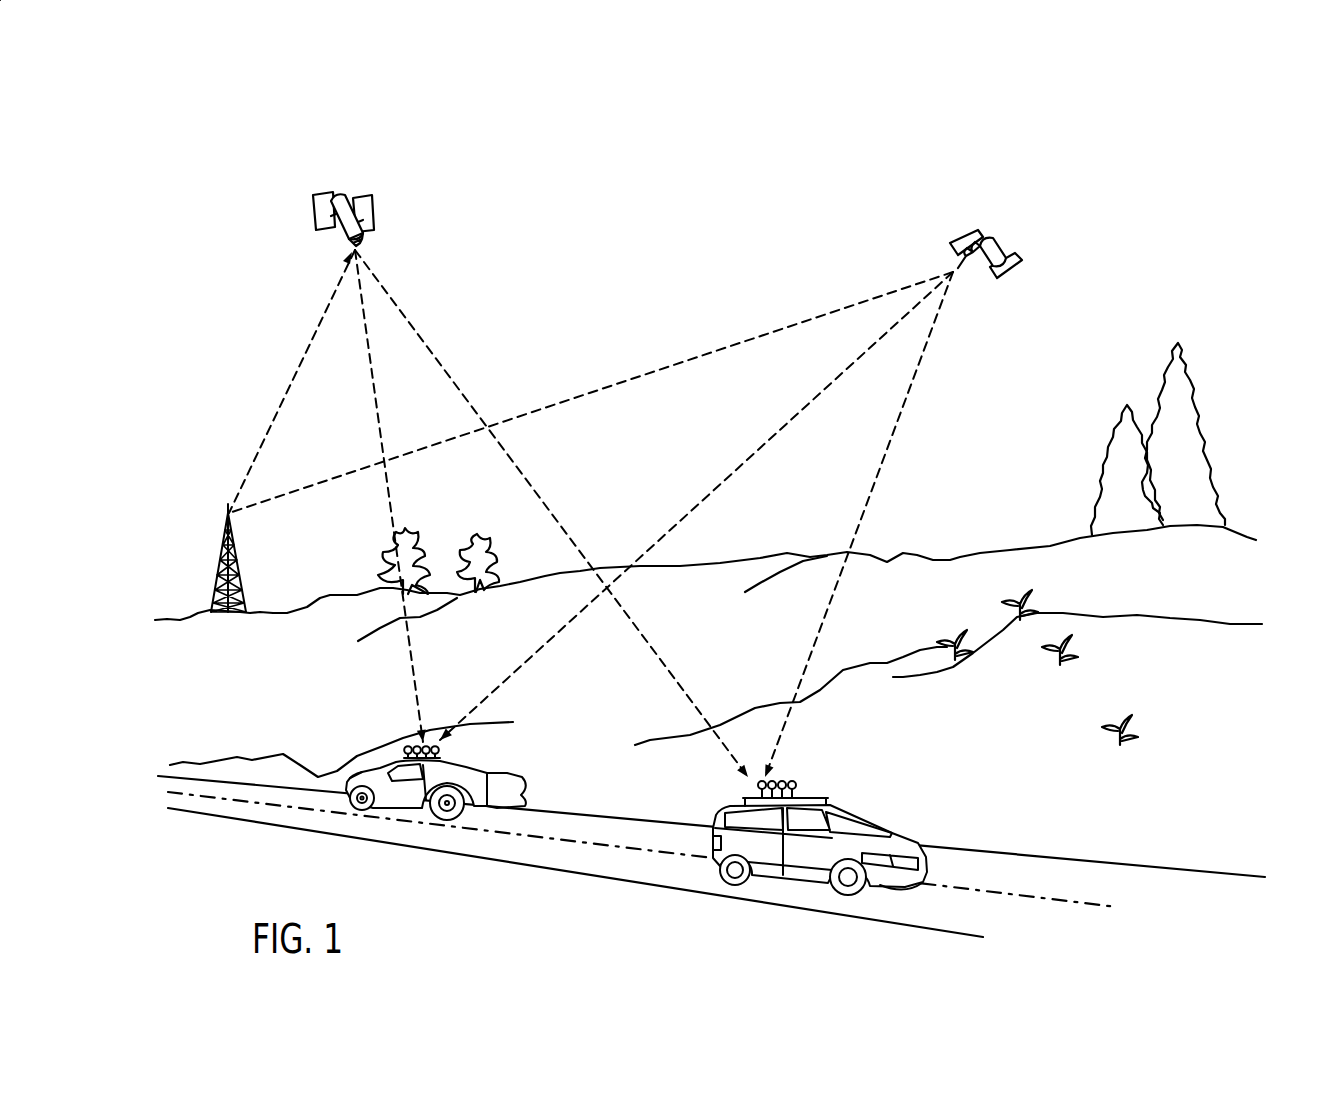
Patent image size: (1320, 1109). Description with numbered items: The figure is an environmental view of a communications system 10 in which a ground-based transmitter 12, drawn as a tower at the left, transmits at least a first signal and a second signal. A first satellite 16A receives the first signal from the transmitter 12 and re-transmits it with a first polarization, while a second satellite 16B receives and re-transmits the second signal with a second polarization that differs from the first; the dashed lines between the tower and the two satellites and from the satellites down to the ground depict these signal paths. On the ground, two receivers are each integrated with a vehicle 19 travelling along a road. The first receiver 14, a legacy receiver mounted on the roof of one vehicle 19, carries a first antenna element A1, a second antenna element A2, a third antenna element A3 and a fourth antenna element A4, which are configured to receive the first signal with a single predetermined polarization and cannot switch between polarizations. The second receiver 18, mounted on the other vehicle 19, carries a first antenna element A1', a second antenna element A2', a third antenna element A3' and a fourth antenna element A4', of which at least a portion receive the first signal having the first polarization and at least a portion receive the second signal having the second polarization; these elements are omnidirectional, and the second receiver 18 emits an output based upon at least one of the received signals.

The communications system 10 is at (1115, 262).
The transmitter 12 is at (213, 592).
The first receiver 14 is at (803, 795).
The first satellite 16A is at (338, 192).
The second satellite 16B is at (997, 240).
The second receiver 18 is at (445, 755).
The vehicle 19 is at (530, 792).
The first antenna element A1 is at (731, 789).
The second antenna element A2 is at (802, 750).
The third antenna element A3 is at (830, 751).
The fourth antenna element A4 is at (832, 771).
The first antenna element A1' is at (372, 739).
The second antenna element A2' is at (383, 721).
The third antenna element A3' is at (450, 715).
The fourth antenna element A4' is at (496, 727).